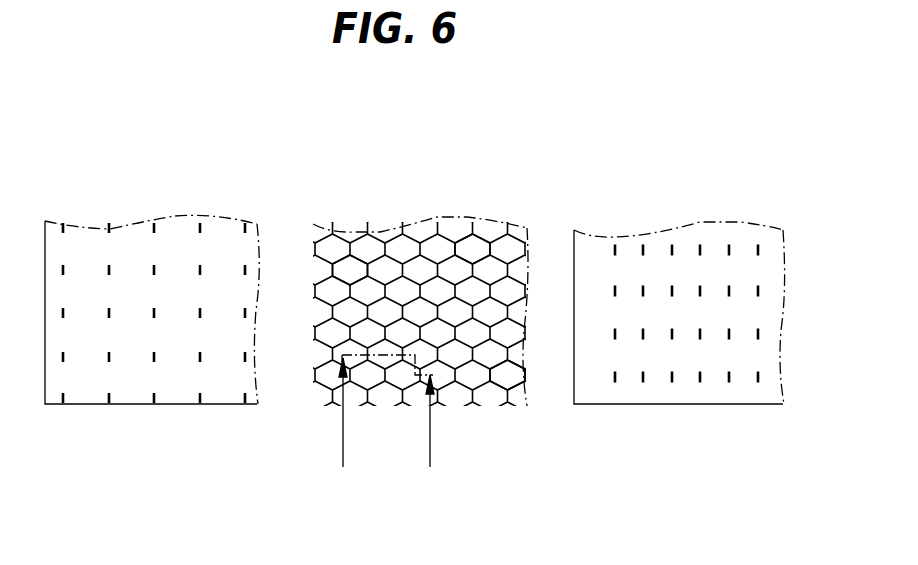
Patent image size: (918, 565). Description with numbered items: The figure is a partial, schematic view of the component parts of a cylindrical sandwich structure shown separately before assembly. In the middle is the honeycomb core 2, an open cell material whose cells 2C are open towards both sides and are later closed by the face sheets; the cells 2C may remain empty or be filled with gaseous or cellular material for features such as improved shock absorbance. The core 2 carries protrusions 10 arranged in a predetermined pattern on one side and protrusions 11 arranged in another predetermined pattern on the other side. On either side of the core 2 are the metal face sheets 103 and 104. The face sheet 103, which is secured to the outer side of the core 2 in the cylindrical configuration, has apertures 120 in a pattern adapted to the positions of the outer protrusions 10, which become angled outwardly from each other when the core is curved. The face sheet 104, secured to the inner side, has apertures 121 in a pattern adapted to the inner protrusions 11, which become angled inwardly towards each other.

The metal face sheet 103 is at (140, 327).
The metal face sheet 104 is at (684, 341).
The apertures 120 is at (199, 268).
The apertures 121 is at (672, 250).
The core 2 is at (435, 325).
The cells 2C is at (507, 373).
The protrusions 10 is at (367, 268).
The protrusions 11 is at (492, 245).